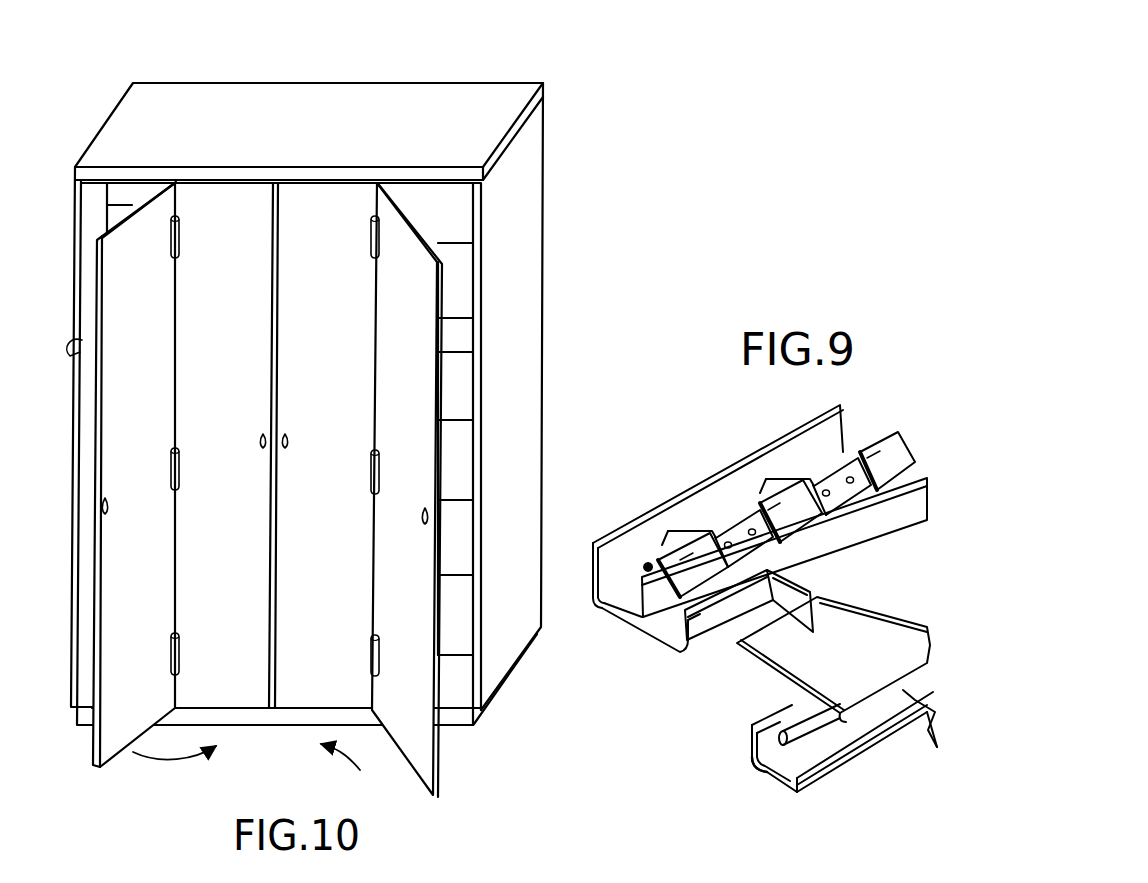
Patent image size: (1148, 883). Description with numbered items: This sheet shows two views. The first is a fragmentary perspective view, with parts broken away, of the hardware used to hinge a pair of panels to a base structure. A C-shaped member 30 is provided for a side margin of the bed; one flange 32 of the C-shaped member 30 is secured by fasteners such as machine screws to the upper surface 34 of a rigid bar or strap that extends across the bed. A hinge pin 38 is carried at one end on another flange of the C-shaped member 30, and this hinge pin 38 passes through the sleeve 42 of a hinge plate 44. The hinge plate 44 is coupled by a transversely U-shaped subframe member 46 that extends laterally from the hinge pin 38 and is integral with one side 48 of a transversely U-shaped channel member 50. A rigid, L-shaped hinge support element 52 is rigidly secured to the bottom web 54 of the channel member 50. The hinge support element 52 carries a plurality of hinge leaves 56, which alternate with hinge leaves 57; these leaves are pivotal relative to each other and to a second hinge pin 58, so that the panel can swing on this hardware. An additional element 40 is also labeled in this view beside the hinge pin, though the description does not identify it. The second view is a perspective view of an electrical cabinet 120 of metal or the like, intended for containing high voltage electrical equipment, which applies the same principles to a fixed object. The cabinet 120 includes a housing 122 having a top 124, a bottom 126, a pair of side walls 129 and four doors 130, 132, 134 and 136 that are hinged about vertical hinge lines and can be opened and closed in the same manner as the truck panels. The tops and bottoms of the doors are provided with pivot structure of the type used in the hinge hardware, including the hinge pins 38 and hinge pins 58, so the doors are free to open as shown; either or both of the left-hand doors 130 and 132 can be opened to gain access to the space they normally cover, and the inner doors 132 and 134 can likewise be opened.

In FIG. 9, the C-shaped member 30 is at (827, 777).
In FIG. 9, the flange 32 is at (792, 784).
In FIG. 9, the upper surface 34 is at (900, 744).
In FIG. 9, the hinge pin 38 is at (762, 773).
In FIG. 9, the pivot rod 40 is at (748, 743).
In FIG. 9, the sleeve 42 is at (857, 697).
In FIG. 9, the hinge plate 44 is at (890, 620).
In FIG. 9, the U-shaped subframe member 46 is at (856, 620).
In FIG. 9, the side of channel member 48 is at (776, 656).
In FIG. 9, the U-shaped channel member 50 is at (640, 617).
In FIG. 9, the hinge support element 52 is at (660, 628).
In FIG. 9, the bottom web 54 is at (753, 560).
In FIG. 9, the hinge leaves 56 is at (794, 499).
In FIG. 9, the hinge leaves 57 is at (672, 566).
In FIG. 9, the hinge pin 58 is at (648, 563).
In FIG. 10, the cabinet 120 is at (350, 417).
In FIG. 10, the housing 122 is at (550, 166).
In FIG. 10, the top 124 is at (357, 98).
In FIG. 10, the bottom 126 is at (271, 712).
In FIG. 10, the side walls 129 is at (82, 350).
In FIG. 10, the door 130 is at (164, 474).
In FIG. 10, the door 132 is at (193, 390).
In FIG. 10, the door 134 is at (360, 348).
In FIG. 10, the door 136 is at (425, 393).